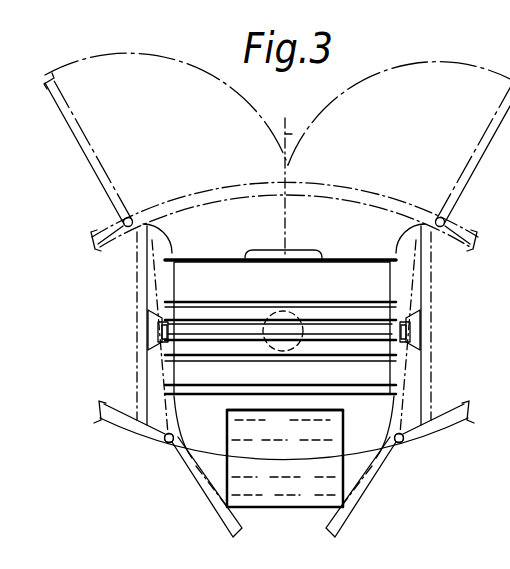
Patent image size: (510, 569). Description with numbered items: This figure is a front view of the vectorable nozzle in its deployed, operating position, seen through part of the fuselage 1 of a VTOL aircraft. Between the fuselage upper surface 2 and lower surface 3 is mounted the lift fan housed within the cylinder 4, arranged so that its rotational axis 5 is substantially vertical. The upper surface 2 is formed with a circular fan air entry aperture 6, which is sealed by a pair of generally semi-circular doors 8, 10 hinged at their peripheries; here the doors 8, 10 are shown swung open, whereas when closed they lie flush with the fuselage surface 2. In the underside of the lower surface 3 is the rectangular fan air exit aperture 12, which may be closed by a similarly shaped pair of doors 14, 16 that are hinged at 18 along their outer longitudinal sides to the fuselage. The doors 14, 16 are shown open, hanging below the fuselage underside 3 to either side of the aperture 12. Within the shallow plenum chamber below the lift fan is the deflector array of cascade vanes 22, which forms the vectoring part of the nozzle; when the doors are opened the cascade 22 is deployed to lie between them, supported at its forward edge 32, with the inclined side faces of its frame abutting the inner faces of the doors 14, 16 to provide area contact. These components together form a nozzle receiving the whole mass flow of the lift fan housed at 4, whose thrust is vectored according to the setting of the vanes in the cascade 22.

The fuselage 1 is at (460, 343).
The upper surface 2 is at (467, 225).
The lower surface 3 is at (442, 432).
The cylinder 4 is at (362, 272).
The rotational axis 5 is at (296, 118).
The fan air entry aperture 6 is at (342, 218).
The door 8 is at (496, 131).
The door 10 is at (72, 133).
The fan air exit aperture 12 is at (308, 419).
The door 14 is at (206, 508).
The door 16 is at (364, 508).
The hinge 18 is at (168, 445).
The cascade vanes 22 is at (285, 515).
The transverse edge member 32 is at (502, 555).